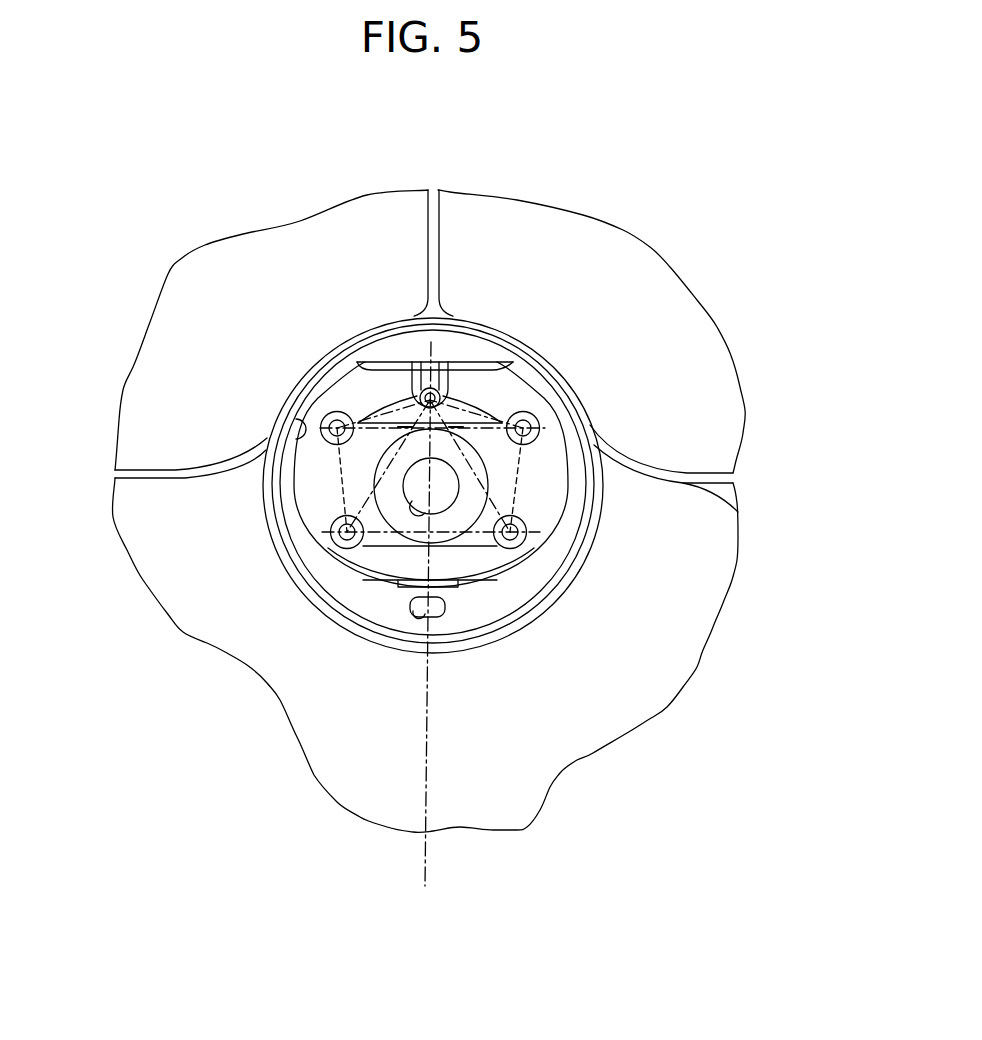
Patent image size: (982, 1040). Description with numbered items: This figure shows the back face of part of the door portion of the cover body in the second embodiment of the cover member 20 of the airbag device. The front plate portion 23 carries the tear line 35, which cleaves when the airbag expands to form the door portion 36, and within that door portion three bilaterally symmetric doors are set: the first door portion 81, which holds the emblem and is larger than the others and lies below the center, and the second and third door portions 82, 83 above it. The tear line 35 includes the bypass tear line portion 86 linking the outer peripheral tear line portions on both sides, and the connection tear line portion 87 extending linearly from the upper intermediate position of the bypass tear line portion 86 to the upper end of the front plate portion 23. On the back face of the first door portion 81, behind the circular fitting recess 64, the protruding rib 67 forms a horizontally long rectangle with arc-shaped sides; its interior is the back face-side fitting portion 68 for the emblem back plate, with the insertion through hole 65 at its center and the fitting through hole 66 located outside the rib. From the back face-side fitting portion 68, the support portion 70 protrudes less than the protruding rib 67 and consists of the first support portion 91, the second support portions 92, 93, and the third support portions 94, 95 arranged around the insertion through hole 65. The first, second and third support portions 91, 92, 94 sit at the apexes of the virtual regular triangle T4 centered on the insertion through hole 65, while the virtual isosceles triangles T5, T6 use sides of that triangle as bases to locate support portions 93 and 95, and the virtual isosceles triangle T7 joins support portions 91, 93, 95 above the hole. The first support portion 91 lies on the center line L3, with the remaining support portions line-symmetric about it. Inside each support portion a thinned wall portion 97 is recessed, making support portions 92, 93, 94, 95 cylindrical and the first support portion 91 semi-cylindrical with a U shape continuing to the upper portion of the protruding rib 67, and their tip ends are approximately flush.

The cover member 20 is at (718, 327).
The front plate portion 23 is at (622, 229).
The tear line 35 is at (738, 512).
The door portion 36 is at (688, 662).
The fitting recess 64 is at (493, 613).
The insertion through hole 65 is at (420, 503).
The fitting through hole 66 is at (410, 612).
The protruding rib 67 is at (484, 361).
The back face-side fitting portion 68 is at (297, 424).
The support portion 70 is at (520, 550).
The first door portion 81 is at (380, 810).
The second door portion 82 is at (513, 212).
The third door portion 83 is at (325, 218).
The bypass tear line portion 86 is at (178, 467).
The connection tear line portion 87 is at (443, 234).
The first support portion 91 is at (429, 361).
The second support portion 92 is at (330, 528).
The second support portion 93 is at (345, 410).
The third support portion 94 is at (527, 540).
The third support portion 95 is at (483, 407).
The thinned wall portion 97 is at (438, 391).
The virtual regular triangle T4 is at (410, 612).
The virtual isosceles triangle T5 is at (384, 410).
The virtual isosceles triangle T6 is at (538, 446).
The virtual isosceles triangle T7 is at (481, 414).
The center line L3 is at (426, 861).